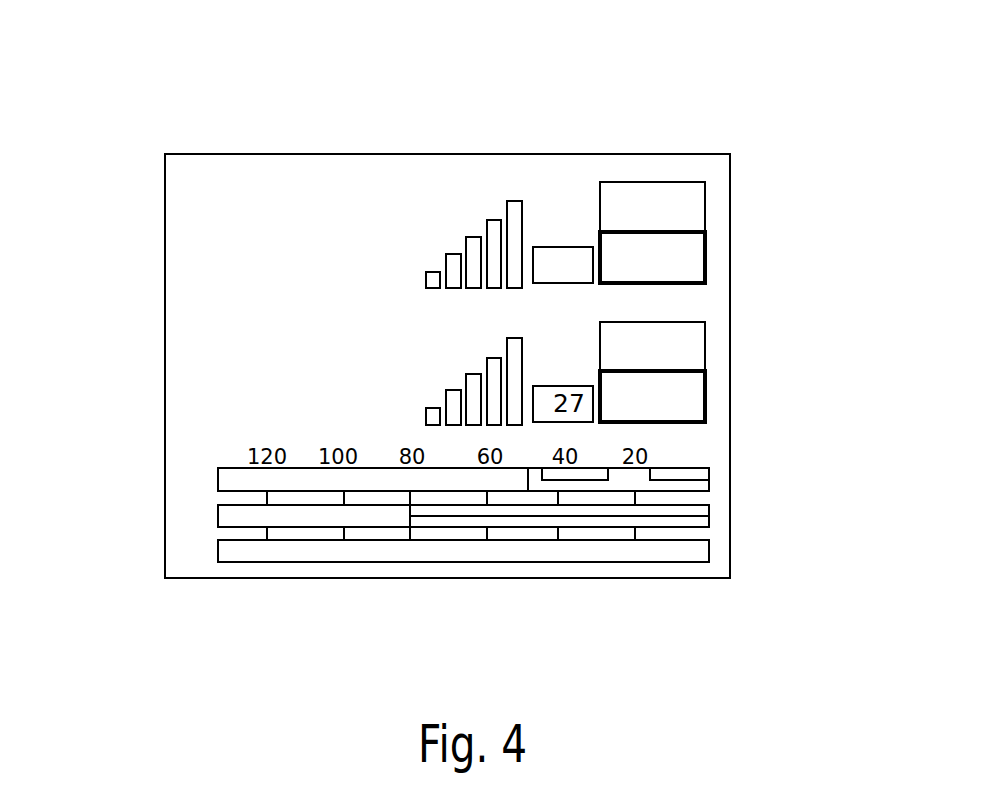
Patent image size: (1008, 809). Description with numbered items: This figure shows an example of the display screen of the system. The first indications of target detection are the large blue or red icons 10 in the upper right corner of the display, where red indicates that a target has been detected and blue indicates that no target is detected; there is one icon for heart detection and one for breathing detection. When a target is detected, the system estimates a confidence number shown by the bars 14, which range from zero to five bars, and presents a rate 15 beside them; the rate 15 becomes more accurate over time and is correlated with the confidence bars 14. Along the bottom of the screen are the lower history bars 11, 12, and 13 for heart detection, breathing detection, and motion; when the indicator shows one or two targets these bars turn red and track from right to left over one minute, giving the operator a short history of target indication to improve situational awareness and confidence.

The icons 10 is at (727, 258).
The heart detection indicator bar 11 is at (165, 473).
The breathing detection indicator bar 12 is at (165, 513).
The motion indicator bar 13 is at (165, 553).
The confidence bars 14 is at (468, 215).
The rate 15 is at (558, 228).